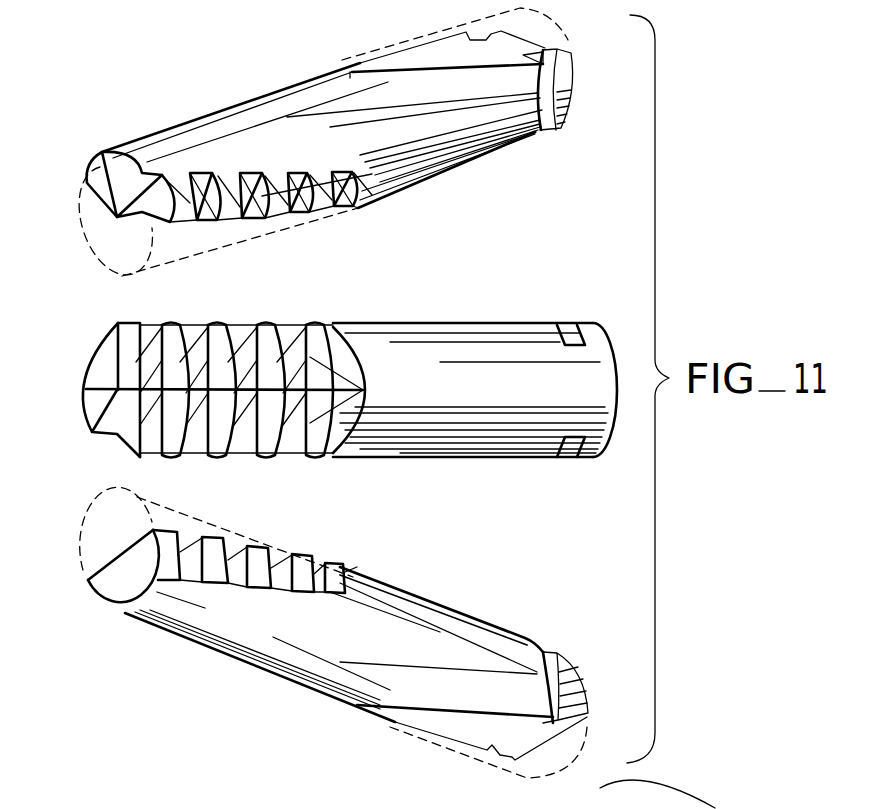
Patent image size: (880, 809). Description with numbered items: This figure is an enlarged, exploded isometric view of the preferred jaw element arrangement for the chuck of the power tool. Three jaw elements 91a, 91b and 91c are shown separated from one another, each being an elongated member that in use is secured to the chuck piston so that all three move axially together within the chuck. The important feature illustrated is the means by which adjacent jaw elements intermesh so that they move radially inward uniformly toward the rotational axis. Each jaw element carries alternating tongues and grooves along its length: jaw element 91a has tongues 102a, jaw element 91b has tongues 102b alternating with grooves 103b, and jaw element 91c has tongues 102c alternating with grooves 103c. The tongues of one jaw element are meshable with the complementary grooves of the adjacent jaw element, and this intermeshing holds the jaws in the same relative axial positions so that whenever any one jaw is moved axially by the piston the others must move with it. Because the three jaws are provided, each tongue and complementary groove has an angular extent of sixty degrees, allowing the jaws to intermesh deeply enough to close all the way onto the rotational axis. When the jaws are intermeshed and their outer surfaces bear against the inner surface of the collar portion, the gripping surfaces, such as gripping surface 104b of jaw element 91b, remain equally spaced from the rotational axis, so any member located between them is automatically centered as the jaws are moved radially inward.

The jaw element 91a is at (188, 632).
The jaw element 91b is at (407, 330).
The jaw element 91c is at (208, 117).
The tongue 102a is at (257, 547).
The tongue 102b is at (207, 323).
The tongue 102c is at (266, 219).
The groove 103b is at (217, 443).
The groove 103c is at (252, 181).
The gripping surface 104b is at (122, 372).